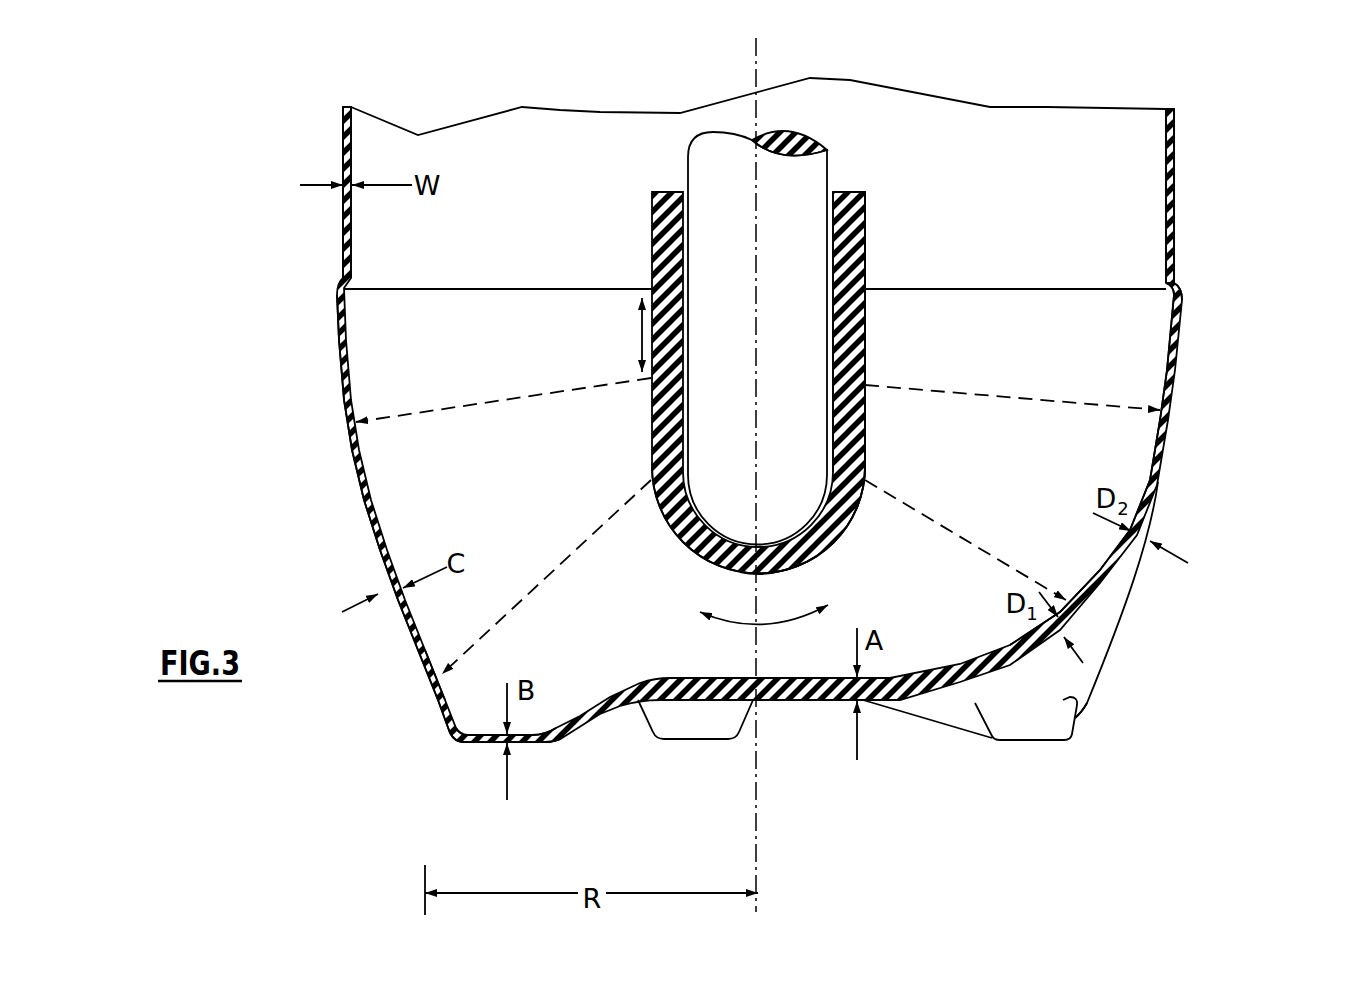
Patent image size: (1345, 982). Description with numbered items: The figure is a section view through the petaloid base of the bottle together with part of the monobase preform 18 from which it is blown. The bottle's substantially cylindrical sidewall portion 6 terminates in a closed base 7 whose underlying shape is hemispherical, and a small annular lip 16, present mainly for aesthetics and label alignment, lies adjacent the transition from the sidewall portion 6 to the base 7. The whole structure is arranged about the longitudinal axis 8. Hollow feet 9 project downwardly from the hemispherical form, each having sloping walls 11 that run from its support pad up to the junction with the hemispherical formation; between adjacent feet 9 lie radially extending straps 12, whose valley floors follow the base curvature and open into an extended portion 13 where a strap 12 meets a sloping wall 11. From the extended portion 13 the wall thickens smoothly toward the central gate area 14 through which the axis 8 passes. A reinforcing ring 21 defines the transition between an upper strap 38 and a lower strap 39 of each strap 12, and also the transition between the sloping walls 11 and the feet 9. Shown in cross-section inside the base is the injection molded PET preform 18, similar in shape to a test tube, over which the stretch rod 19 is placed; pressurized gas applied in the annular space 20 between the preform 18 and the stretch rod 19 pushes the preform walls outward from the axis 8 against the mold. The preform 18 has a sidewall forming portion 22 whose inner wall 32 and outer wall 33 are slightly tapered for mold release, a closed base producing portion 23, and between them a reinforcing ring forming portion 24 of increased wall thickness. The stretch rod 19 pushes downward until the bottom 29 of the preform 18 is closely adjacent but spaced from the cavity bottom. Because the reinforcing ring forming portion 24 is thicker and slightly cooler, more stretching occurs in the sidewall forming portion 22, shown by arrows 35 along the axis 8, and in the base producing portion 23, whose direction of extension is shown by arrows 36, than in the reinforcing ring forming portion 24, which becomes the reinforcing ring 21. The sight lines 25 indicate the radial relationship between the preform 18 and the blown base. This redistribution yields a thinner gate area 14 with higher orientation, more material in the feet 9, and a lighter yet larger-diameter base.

The sidewall portion 6 is at (1175, 170).
The base 7 is at (1215, 420).
The longitudinal axis 8 is at (758, 52).
The hollow feet 9 is at (433, 793).
The sloping walls 11 is at (368, 757).
The straps 12 is at (1307, 575).
The extended portion 13 is at (1160, 497).
The gate area 14 is at (947, 795).
The annular lip 16 is at (1187, 275).
The monobase preform 18 is at (875, 213).
The stretch rod 19 is at (830, 172).
The annular space 20 is at (683, 193).
The reinforcing ring 21 is at (434, 680).
The sidewall forming portion 22 is at (853, 377).
The base producing portion 23 is at (817, 562).
The reinforcing ring forming portion 24 is at (851, 447).
The radial sight lines 25 is at (480, 406).
The bottom of the preform 29 is at (757, 575).
The inner wall 32 is at (838, 238).
The outer wall 33 is at (866, 328).
The arrows 35 is at (640, 332).
The arrows 36 is at (740, 622).
The upper strap 38 is at (1217, 528).
The lower strap 39 is at (1083, 716).